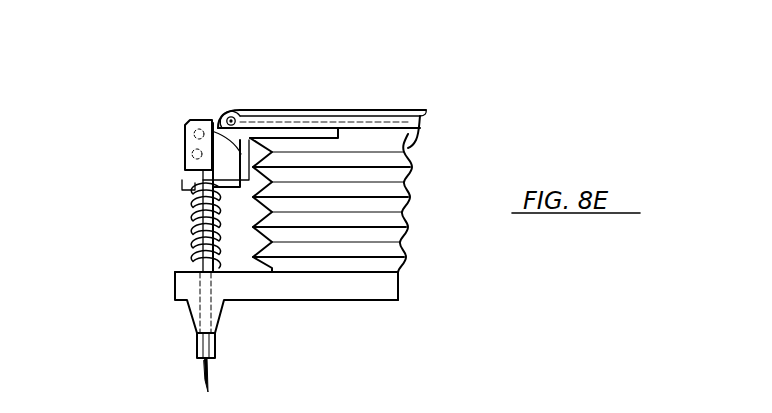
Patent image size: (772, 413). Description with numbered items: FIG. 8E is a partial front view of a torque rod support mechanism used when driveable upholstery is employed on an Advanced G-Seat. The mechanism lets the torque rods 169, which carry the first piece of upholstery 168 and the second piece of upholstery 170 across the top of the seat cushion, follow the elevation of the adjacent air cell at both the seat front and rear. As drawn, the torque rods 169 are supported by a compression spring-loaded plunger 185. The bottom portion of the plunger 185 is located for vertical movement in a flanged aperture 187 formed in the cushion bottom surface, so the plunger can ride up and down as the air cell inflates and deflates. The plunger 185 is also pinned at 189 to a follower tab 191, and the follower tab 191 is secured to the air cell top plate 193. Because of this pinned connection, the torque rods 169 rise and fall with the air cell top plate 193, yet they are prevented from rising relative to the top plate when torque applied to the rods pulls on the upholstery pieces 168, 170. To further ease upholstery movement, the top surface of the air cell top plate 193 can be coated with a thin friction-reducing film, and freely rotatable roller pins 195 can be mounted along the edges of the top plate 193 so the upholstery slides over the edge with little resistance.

The first piece of upholstery 168 is at (315, 109).
The torque rods 169 is at (195, 152).
The second piece of upholstery 170 is at (342, 109).
The compression spring-loaded plunger 185 is at (197, 223).
The flanged aperture 187 is at (190, 309).
The pin 189 is at (188, 176).
The follower tab 191 is at (198, 111).
The air cell top plate 193 is at (418, 122).
The roller pins 195 is at (231, 108).